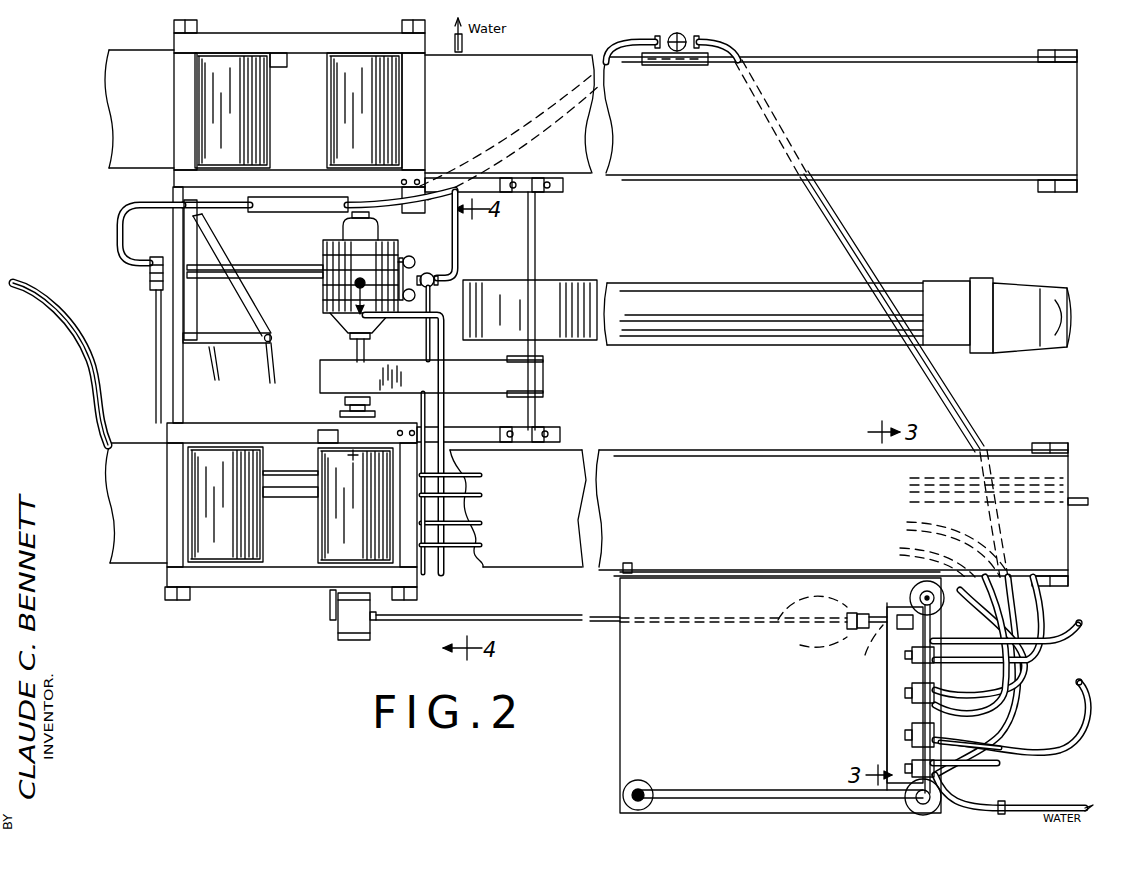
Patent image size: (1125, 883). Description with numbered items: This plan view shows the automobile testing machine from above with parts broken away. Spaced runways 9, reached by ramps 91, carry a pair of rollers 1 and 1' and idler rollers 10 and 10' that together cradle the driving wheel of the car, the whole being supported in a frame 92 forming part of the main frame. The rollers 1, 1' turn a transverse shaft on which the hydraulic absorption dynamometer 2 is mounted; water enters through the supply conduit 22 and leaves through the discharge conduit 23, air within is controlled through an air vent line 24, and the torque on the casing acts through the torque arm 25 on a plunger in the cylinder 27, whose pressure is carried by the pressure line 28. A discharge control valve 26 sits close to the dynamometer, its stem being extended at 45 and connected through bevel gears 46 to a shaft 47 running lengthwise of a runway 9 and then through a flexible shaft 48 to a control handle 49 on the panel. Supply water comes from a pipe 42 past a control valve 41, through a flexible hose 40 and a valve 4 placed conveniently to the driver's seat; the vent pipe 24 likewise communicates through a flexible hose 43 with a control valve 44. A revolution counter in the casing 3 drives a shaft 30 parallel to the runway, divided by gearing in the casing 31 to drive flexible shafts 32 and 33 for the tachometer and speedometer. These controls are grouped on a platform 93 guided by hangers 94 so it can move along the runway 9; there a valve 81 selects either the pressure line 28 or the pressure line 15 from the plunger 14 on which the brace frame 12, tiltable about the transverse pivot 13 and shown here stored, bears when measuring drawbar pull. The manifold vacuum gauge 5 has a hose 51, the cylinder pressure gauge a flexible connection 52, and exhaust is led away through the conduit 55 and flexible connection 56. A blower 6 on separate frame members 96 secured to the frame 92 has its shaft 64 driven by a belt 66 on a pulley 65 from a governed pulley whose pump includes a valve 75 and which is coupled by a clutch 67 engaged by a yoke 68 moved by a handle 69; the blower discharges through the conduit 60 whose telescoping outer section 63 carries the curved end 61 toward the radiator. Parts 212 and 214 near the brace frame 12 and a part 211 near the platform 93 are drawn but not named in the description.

The roller 1 is at (340, 505).
The roller 1' is at (364, 89).
The hydraulic absorption dynamometer 2 is at (322, 292).
The casing 3 is at (348, 623).
The valve 4 is at (700, 33).
The manifold vacuum gauge 5 is at (350, 456).
The blower 6 is at (563, 284).
The runway 9 is at (1058, 142).
The roller 10 is at (224, 540).
The roller 10' is at (245, 89).
The brace frame 12 is at (190, 313).
The transverse pivot 13 is at (187, 350).
The plunger 14 is at (276, 342).
The pressure line 15 is at (268, 383).
The conduit 22 is at (408, 256).
The conduit 23 is at (418, 278).
The air vent line 24 is at (449, 353).
The torque arm 25 is at (288, 270).
The control valve 26 is at (440, 273).
The cylinder 27 is at (150, 282).
The pressure line 28 is at (158, 384).
The shaft 30 is at (528, 617).
The casing 31 is at (816, 643).
The flexible shaft 32 is at (1033, 692).
The flexible shaft 33 is at (866, 614).
The flexible hose 40 is at (273, 203).
The control valve 41 is at (992, 745).
The pipe 42 is at (1040, 805).
The flexible hose 43 is at (1068, 538).
The control valve 44 is at (900, 698).
The valve stem extension 45 is at (424, 342).
The bevel gears 46 is at (424, 565).
The shaft 47 is at (470, 560).
The pulley 48 is at (940, 603).
The control handle 49 is at (898, 660).
The flexible conduit 51 is at (1083, 714).
The flexible connection 52 is at (1072, 627).
The conduit 55 is at (465, 495).
The flexible connection 56 is at (56, 305).
The conduit 60 is at (656, 348).
The discharge end 61 is at (985, 292).
The outer section 63 is at (1050, 352).
The shaft 64 is at (537, 418).
The pulley 65 is at (545, 396).
The belt 66 is at (545, 375).
The clutch 67 is at (372, 406).
The yoke 68 is at (325, 431).
The handle 69 is at (328, 601).
The valve 75 is at (357, 347).
The valve 81 is at (900, 722).
The ramps 91 is at (107, 121).
The frame 92 is at (176, 180).
The platform 93 is at (620, 682).
The hangers 94 is at (634, 570).
The frame members 96 is at (478, 422).
The valve 211 is at (900, 750).
The rod 212 is at (1026, 769).
The brace 214 is at (204, 261).